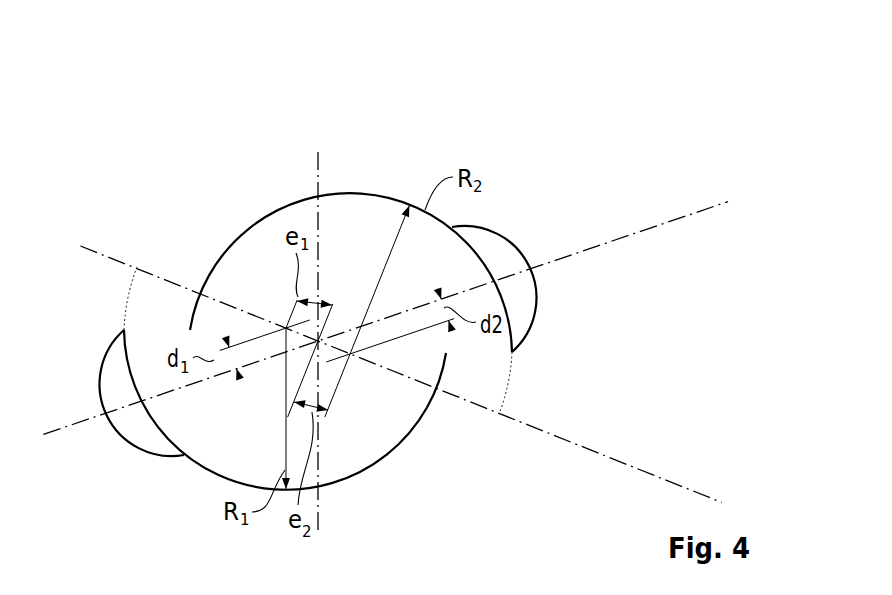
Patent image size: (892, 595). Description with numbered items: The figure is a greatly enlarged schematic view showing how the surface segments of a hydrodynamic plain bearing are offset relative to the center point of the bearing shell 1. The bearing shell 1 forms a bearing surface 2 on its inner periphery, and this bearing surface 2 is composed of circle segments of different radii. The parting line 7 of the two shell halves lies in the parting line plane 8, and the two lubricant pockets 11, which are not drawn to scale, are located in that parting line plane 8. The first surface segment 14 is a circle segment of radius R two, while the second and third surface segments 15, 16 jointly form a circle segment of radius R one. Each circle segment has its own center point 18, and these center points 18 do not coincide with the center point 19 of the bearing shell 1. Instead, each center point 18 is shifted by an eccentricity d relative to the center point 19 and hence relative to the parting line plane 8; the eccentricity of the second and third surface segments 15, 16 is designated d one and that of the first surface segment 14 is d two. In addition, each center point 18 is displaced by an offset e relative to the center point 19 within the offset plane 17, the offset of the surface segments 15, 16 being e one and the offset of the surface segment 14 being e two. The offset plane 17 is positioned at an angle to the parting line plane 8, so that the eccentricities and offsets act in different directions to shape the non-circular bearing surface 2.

The bearing shell 1 is at (412, 158).
The bearing surface 2 is at (399, 446).
The parting line 7 is at (510, 258).
The parting line plane 8 is at (682, 212).
The lubricant pockets 11 is at (496, 229).
The first surface segment 14 is at (350, 190).
The second surface segment 15 is at (199, 458).
The third surface segment 16 is at (447, 364).
The offset plane 17 is at (642, 468).
The center point of circle segment 18 is at (286, 328).
The center point of bearing shell 19 is at (318, 341).